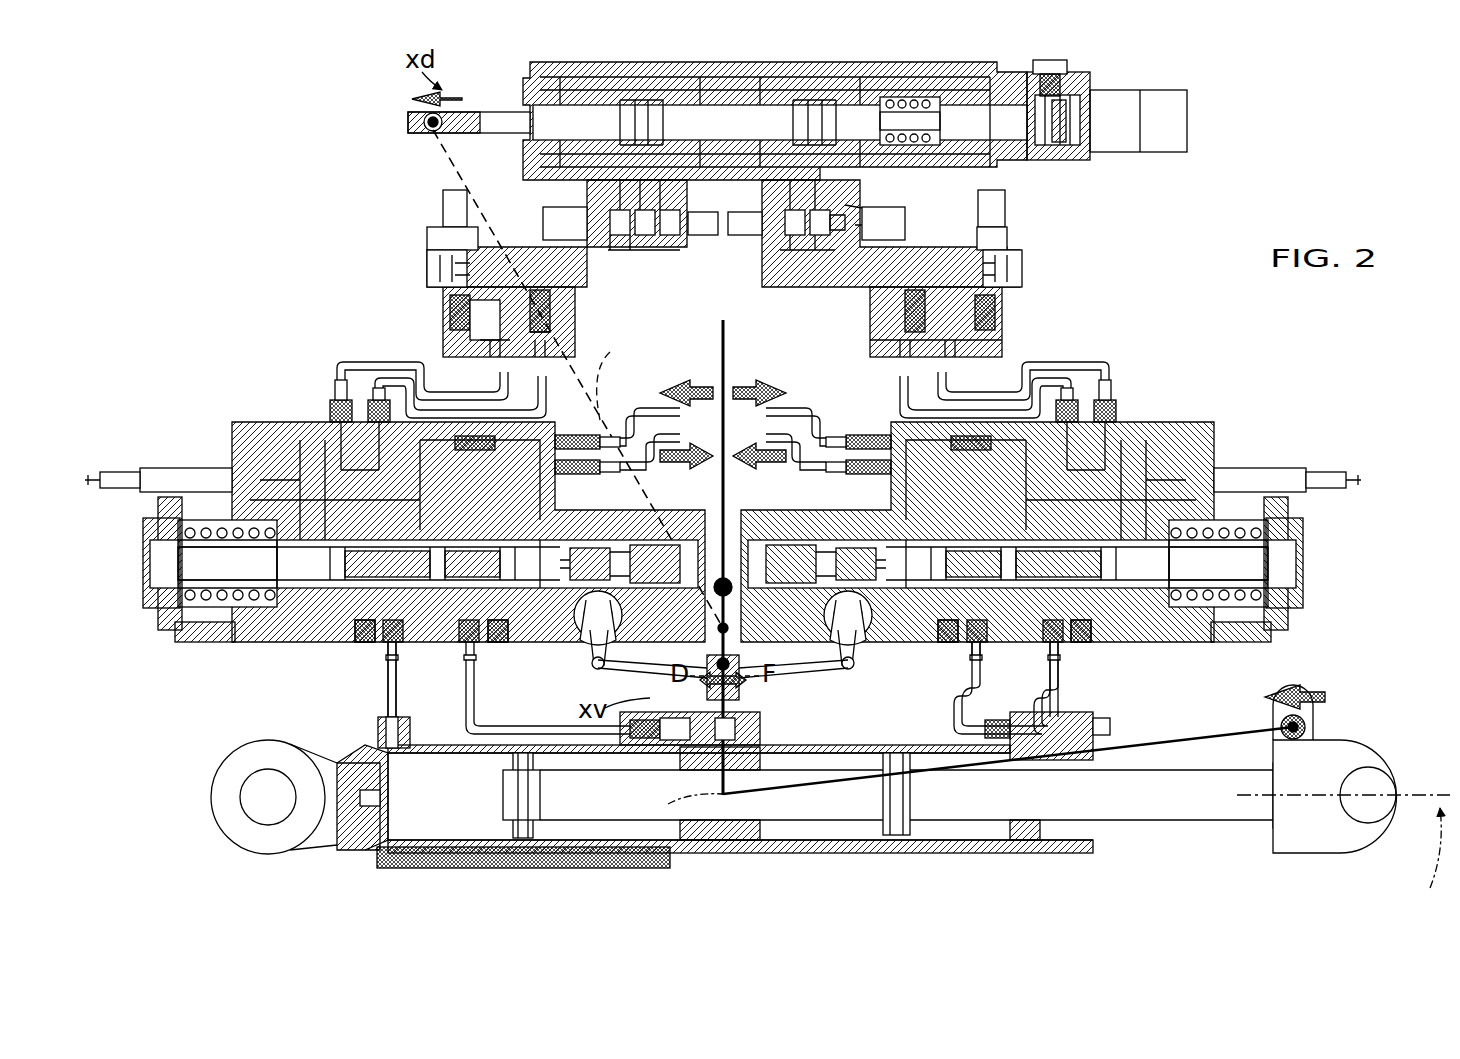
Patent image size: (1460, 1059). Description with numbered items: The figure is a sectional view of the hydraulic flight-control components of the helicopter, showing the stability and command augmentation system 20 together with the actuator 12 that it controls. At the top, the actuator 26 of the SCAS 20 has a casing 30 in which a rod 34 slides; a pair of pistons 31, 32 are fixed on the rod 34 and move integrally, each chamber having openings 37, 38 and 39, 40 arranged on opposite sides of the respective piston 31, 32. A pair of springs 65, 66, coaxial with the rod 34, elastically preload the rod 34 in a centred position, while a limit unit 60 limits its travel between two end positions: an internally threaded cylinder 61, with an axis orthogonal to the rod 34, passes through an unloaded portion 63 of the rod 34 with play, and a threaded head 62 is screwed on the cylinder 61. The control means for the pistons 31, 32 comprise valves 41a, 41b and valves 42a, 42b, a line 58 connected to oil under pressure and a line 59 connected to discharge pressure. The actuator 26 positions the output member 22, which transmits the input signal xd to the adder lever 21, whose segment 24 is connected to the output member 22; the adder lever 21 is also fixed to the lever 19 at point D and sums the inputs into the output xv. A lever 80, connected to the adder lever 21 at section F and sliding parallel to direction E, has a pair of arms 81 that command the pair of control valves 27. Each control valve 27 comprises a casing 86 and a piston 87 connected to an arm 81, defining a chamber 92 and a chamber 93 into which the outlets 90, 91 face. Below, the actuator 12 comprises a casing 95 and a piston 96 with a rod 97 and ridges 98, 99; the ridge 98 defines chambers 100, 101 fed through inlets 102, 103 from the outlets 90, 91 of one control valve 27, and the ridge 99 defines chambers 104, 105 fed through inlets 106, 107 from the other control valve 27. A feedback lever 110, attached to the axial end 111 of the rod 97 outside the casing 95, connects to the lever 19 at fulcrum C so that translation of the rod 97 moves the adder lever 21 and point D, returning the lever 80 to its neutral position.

The actuator 12 is at (830, 799).
The lever 19 is at (726, 362).
The stability and command augmentation system 20 is at (1205, 212).
The adder lever 21 is at (456, 152).
The output member 22 is at (468, 120).
The segment 24 is at (616, 377).
The actuator 26 is at (812, 116).
The control valves 27 is at (148, 625).
The casing 30 is at (722, 62).
The piston 31 is at (638, 100).
The piston 32 is at (830, 98).
The rod 34 is at (785, 98).
The opening 37 is at (605, 185).
The opening 38 is at (665, 200).
The opening 39 is at (795, 205).
The opening 40 is at (838, 205).
The valve 41a is at (418, 272).
The valve 41b is at (1030, 272).
The valve 42a is at (542, 222).
The valve 42b is at (908, 226).
The line 58 is at (665, 407).
The line 59 is at (648, 462).
The limit unit 60 is at (1012, 44).
The internally threaded cylinder 61 is at (1056, 142).
The threaded head 62 is at (1068, 70).
The unloaded portion 63 is at (1058, 125).
The spring 65 is at (900, 96).
The spring 66 is at (925, 96).
The lever 80 is at (795, 690).
The arms 81 is at (648, 670).
The casing 86 is at (305, 642).
The piston 87 is at (282, 562).
The outlet 90 is at (390, 648).
The outlet 91 is at (466, 645).
The chamber 92 is at (365, 642).
The chamber 93 is at (492, 642).
The casing 95 is at (368, 835).
The piston 96 is at (970, 812).
The rod 97 is at (1188, 800).
The ridge 98 is at (520, 838).
The ridge 99 is at (895, 838).
The chamber 100 is at (415, 816).
The chamber 101 is at (630, 860).
The inlet 102 is at (403, 750).
The inlet 103 is at (680, 760).
The chamber 104 is at (840, 828).
The chamber 105 is at (1015, 812).
The inlet 106 is at (762, 742).
The inlet 107 is at (1040, 762).
The feedback lever 110 is at (1192, 728).
The axial end 111 is at (1368, 745).